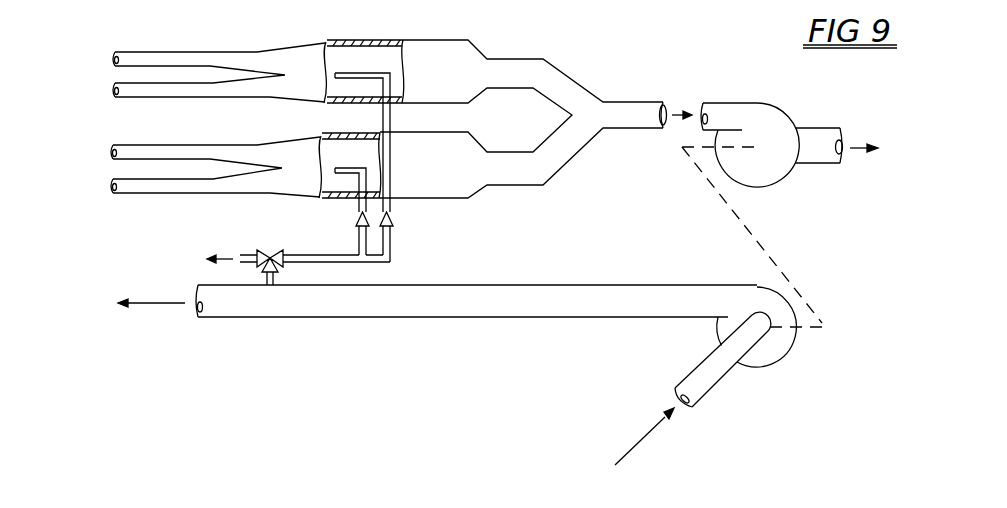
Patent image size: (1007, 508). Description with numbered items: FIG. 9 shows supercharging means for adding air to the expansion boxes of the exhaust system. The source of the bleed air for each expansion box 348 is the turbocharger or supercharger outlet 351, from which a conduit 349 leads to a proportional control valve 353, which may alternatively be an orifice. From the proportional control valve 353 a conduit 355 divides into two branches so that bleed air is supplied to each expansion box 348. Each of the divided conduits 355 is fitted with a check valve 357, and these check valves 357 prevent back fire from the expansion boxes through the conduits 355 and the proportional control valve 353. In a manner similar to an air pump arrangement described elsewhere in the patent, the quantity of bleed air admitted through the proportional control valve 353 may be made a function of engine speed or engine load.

The expansion box 348 is at (443, 50).
The conduit 349 is at (275, 286).
The turbocharger or supercharger outlet 351 is at (528, 318).
The proportional control valve 353 is at (267, 255).
The conduit 355 is at (338, 250).
The check valve 357 is at (356, 222).